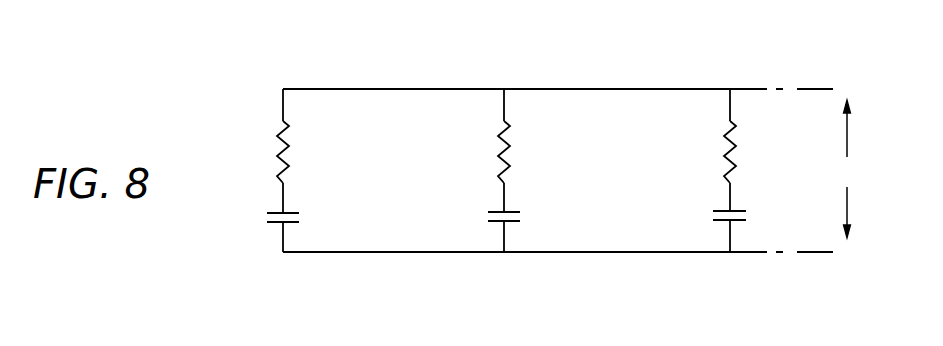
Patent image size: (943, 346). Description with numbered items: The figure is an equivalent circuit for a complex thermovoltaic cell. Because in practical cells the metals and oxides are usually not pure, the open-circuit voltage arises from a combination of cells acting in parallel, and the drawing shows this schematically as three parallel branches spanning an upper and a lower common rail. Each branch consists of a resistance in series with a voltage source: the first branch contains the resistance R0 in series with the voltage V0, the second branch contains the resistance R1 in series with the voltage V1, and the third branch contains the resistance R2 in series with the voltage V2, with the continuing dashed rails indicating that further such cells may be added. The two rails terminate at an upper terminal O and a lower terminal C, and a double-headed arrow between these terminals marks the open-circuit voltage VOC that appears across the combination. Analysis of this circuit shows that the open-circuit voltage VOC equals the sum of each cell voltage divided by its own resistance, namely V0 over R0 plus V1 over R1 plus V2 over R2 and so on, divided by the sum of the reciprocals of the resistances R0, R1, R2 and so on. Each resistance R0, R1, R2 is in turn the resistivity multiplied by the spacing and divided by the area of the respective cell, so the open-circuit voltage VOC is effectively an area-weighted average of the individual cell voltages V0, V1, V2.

The resistance of cell 0 R0 is at (301, 152).
The resistance of cell 1 R1 is at (522, 152).
The resistance of cell 2 R2 is at (747, 152).
The voltage of cell 0 V0 is at (300, 221).
The voltage of cell 1 V1 is at (519, 216).
The voltage of cell 2 V2 is at (743, 216).
The open terminal O is at (845, 88).
The common terminal C is at (845, 251).
The open-circuit voltage VOC is at (857, 169).